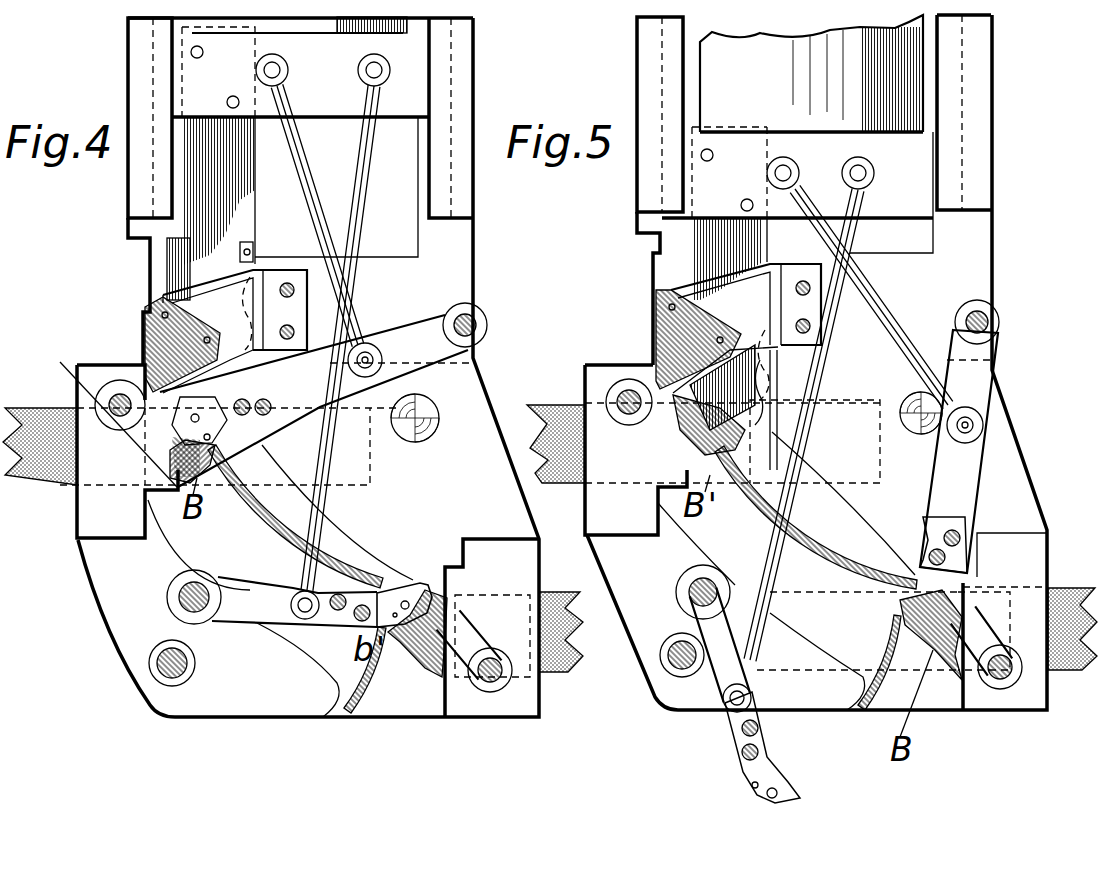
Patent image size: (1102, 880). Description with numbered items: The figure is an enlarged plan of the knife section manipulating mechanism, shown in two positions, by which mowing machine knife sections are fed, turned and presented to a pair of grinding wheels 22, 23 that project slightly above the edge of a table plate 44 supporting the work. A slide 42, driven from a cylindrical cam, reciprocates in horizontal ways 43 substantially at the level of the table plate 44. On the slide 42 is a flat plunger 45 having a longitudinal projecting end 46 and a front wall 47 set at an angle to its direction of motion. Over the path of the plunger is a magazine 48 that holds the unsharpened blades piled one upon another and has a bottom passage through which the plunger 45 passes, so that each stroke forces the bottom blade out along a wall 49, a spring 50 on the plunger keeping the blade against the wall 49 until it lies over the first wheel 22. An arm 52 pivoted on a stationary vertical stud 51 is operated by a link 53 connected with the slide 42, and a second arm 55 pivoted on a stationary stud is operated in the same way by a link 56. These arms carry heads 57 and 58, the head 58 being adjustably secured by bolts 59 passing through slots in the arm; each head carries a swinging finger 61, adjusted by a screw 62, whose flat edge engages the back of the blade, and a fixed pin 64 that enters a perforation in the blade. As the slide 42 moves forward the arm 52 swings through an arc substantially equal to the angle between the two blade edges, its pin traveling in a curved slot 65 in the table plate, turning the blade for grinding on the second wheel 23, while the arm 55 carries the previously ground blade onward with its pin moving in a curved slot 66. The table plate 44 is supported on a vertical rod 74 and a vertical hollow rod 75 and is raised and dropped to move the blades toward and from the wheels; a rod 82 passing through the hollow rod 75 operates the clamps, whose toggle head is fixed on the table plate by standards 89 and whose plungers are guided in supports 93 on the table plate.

In FIG. 4, the grinding wheel 22 is at (39, 427).
In FIG. 5, the grinding wheel 22 is at (556, 464).
In FIG. 4, the grinding wheel 23 is at (548, 665).
In FIG. 5, the grinding wheel 23 is at (1050, 605).
In FIG. 4, the slide 42 is at (420, 64).
In FIG. 5, the slide 42 is at (797, 116).
In FIG. 4, the horizontal ways 43 is at (128, 48).
In FIG. 5, the horizontal ways 43 is at (643, 85).
In FIG. 4, the table plate 44 is at (110, 605).
In FIG. 5, the table plate 44 is at (608, 565).
In FIG. 4, the plunger 45 is at (194, 262).
In FIG. 5, the plunger 45 is at (700, 238).
In FIG. 5, the longitudinal projecting end 46 is at (752, 463).
In FIG. 5, the front wall 47 is at (742, 428).
In FIG. 4, the magazine 48 is at (198, 304).
In FIG. 5, the magazine 48 is at (705, 315).
In FIG. 4, the wall 49 is at (139, 345).
In FIG. 5, the wall 49 is at (649, 346).
In FIG. 4, the spring 50 is at (257, 319).
In FIG. 5, the spring 50 is at (767, 388).
In FIG. 4, the stationary vertical stud 51 is at (487, 323).
In FIG. 5, the stationary vertical stud 51 is at (999, 323).
In FIG. 4, the arm 52 is at (420, 313).
In FIG. 5, the arm 52 is at (967, 493).
In FIG. 4, the link 53 is at (313, 205).
In FIG. 5, the link 53 is at (890, 318).
In FIG. 4, the second arm 55 is at (253, 575).
In FIG. 5, the second arm 55 is at (720, 667).
In FIG. 4, the link 56 is at (356, 231).
In FIG. 5, the link 56 is at (821, 348).
In FIG. 4, the head 57 is at (214, 401).
In FIG. 5, the head 57 is at (920, 567).
In FIG. 4, the head 58 is at (412, 583).
In FIG. 5, the head 58 is at (785, 772).
In FIG. 4, the bolts 59 is at (263, 415).
In FIG. 5, the bolts 59 is at (960, 538).
In FIG. 5, the finger 61 is at (980, 567).
In FIG. 5, the screw 62 is at (903, 610).
In FIG. 5, the fixed pin 64 is at (752, 785).
In FIG. 4, the curved slot 65 is at (338, 570).
In FIG. 5, the curved slot 65 is at (833, 550).
In FIG. 4, the curved slot 66 is at (362, 717).
In FIG. 5, the curved slot 66 is at (903, 660).
In FIG. 4, the vertical rod 74 is at (425, 433).
In FIG. 5, the vertical rod 74 is at (914, 422).
In FIG. 4, the vertical hollow rod 75 is at (150, 675).
In FIG. 5, the vertical hollow rod 75 is at (672, 655).
In FIG. 4, the rod 82 is at (175, 678).
In FIG. 5, the rod 82 is at (682, 677).
In FIG. 4, the standards 89 is at (105, 395).
In FIG. 5, the standards 89 is at (606, 395).
In FIG. 4, the supports 93 is at (440, 653).